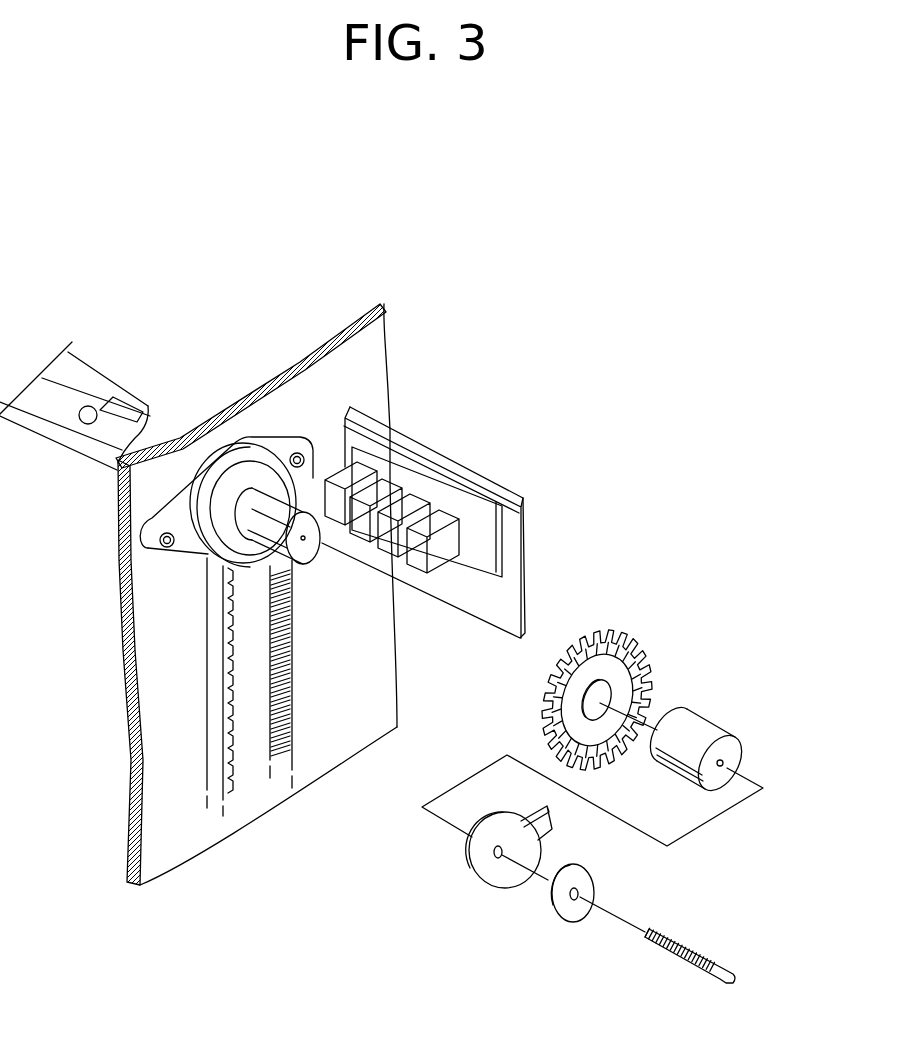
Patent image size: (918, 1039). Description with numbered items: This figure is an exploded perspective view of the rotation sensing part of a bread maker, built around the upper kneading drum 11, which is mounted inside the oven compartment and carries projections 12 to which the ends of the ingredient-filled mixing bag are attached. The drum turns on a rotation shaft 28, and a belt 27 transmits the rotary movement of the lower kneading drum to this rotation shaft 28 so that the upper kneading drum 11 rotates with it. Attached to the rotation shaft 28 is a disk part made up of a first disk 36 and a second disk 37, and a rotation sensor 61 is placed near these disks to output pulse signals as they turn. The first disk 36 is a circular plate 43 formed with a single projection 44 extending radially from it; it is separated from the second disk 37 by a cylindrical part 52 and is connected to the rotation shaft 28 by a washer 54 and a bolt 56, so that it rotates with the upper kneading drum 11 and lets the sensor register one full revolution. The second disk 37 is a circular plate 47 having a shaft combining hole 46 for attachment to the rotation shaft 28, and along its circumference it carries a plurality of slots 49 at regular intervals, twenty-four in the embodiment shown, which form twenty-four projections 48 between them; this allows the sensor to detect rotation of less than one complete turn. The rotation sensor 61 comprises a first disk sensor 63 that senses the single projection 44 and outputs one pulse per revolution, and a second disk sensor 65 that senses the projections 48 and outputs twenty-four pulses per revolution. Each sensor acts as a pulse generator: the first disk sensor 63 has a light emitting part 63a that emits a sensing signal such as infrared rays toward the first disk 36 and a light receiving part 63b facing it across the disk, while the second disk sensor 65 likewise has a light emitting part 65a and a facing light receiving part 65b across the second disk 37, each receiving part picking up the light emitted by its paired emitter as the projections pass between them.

The upper kneading drum 11 is at (70, 366).
The projections 12 is at (97, 412).
The belt 27 is at (210, 655).
The rotation shaft 28 is at (263, 498).
The first disk 36 is at (496, 917).
The second disk 37 is at (616, 657).
The circular plate 43 is at (488, 883).
The single projection 44 is at (540, 830).
The shaft combining hole 46 is at (600, 702).
The circular plate 47 is at (615, 688).
The projections 48 is at (622, 663).
The slots 49 is at (597, 637).
The cylindrical part 52 is at (715, 737).
The washer 54 is at (583, 910).
The bolt 56 is at (699, 950).
The rotation sensor 61 is at (461, 478).
The first disk sensor 63 is at (489, 478).
The light emitting part 63a is at (450, 517).
The light receiving part 63b is at (418, 500).
The second disk sensor 65 is at (417, 438).
The light emitting part 65a is at (392, 487).
The light receiving part 65b is at (353, 473).